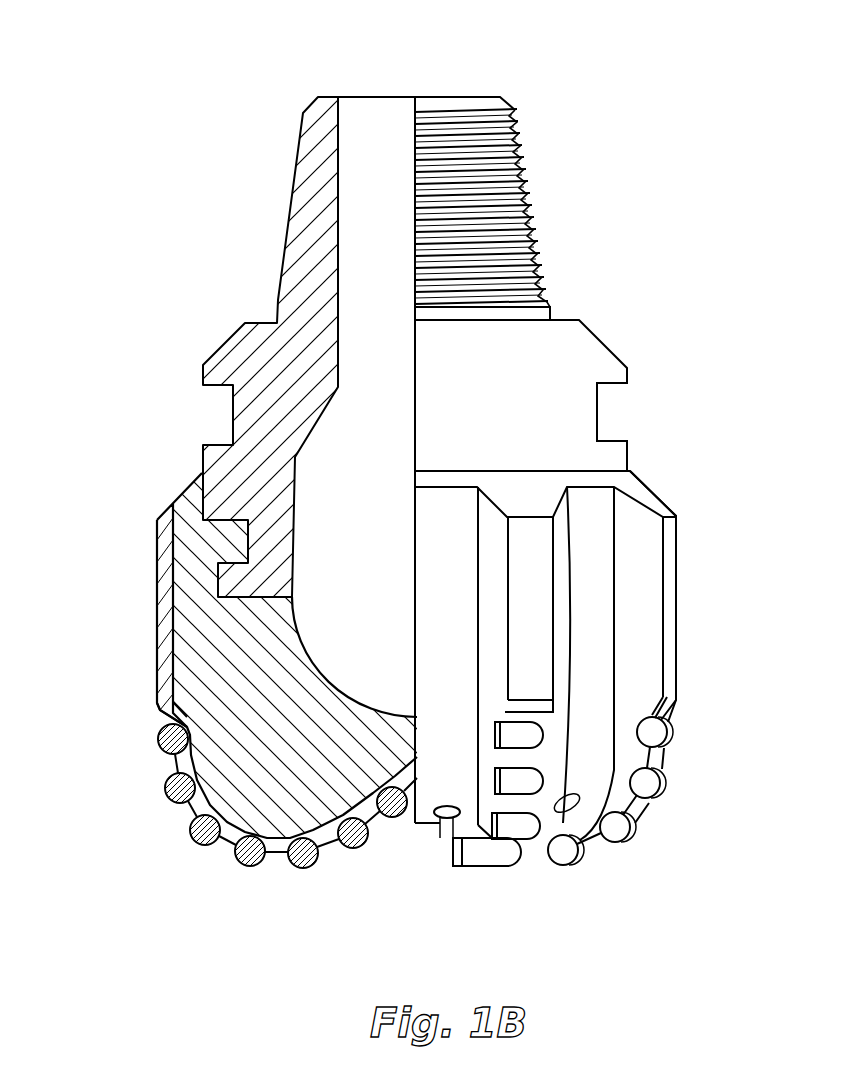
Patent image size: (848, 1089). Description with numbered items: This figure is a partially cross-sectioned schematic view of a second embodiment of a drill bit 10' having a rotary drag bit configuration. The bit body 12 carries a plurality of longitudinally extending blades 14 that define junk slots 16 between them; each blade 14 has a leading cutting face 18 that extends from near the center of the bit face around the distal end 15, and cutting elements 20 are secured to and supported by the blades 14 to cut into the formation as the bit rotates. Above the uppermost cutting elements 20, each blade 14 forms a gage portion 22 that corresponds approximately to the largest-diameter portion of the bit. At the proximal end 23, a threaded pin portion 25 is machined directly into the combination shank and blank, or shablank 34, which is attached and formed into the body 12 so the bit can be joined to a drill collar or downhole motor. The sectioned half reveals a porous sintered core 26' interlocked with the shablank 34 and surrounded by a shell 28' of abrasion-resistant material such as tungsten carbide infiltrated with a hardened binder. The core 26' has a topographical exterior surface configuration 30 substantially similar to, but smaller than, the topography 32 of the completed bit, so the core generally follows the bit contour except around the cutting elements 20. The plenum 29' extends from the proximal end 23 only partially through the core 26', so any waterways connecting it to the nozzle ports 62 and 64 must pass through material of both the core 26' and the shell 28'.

The drill bit 10' is at (549, 398).
The bit body 12 is at (678, 636).
The blades 14 is at (530, 553).
The distal end 15 is at (272, 858).
The junk slots 16 is at (590, 685).
The cutting face 18 is at (445, 826).
The cutting elements 20 is at (637, 837).
The gage portion 22 is at (150, 527).
The proximal end 23 is at (463, 97).
The threaded pin portion 25 is at (530, 105).
The core 26' is at (247, 655).
The shell 28' is at (102, 714).
The plenum 29' is at (292, 460).
The topographical exterior surface configuration 30 is at (187, 807).
The topography 32 is at (227, 843).
The shablank 34 is at (303, 172).
The nozzle port 62 is at (410, 857).
The nozzle port 64 is at (540, 863).